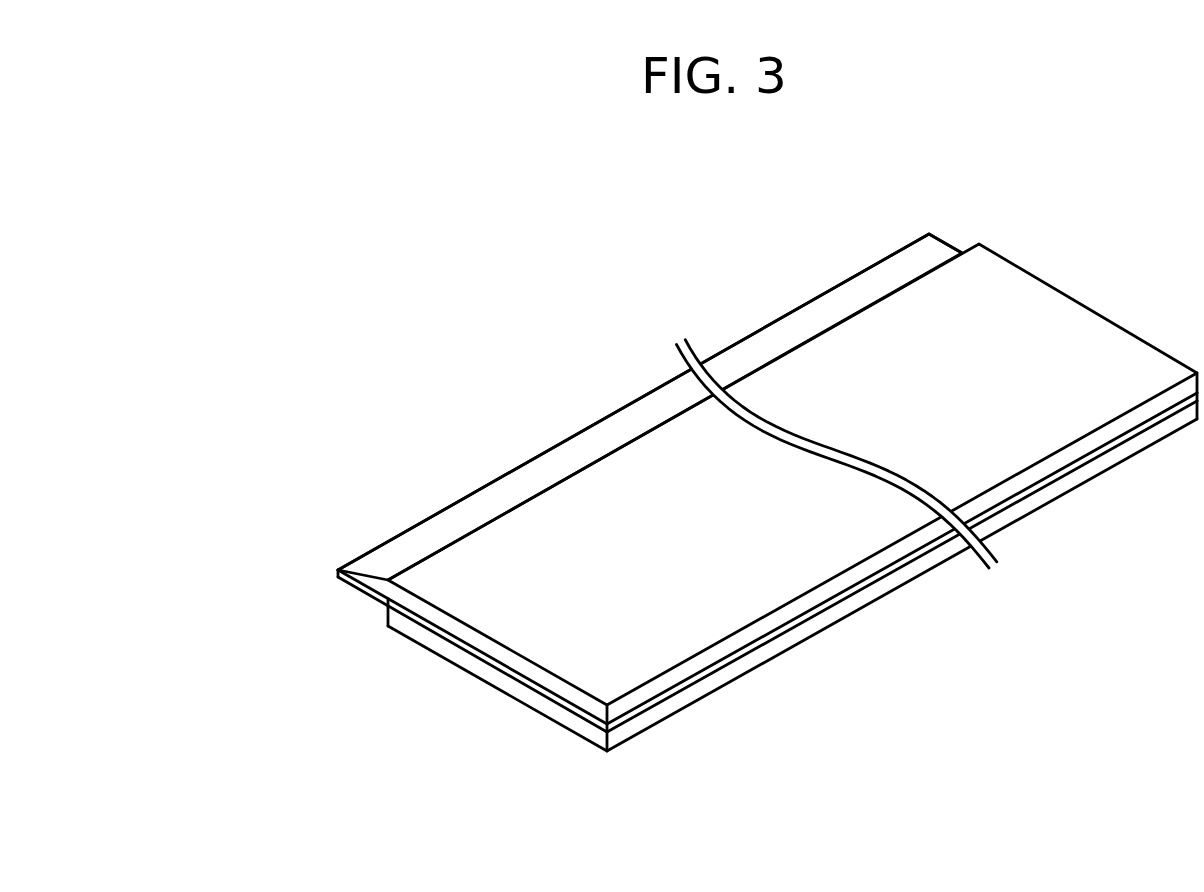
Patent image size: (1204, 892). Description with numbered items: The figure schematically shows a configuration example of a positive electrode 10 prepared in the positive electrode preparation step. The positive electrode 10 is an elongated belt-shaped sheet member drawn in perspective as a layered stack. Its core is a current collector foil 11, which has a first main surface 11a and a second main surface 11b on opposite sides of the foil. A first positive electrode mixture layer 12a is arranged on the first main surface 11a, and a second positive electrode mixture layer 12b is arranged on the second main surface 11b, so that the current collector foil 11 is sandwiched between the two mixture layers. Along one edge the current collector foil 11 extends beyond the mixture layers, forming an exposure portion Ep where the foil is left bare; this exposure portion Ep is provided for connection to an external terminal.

The positive electrode 10 is at (691, 488).
The current collector foil 11 is at (701, 462).
The first main surface 11a is at (373, 570).
The second main surface 11b is at (375, 598).
The first positive electrode mixture layer 12a is at (487, 641).
The second positive electrode mixture layer 12b is at (777, 584).
The exposure portion Ep is at (812, 325).